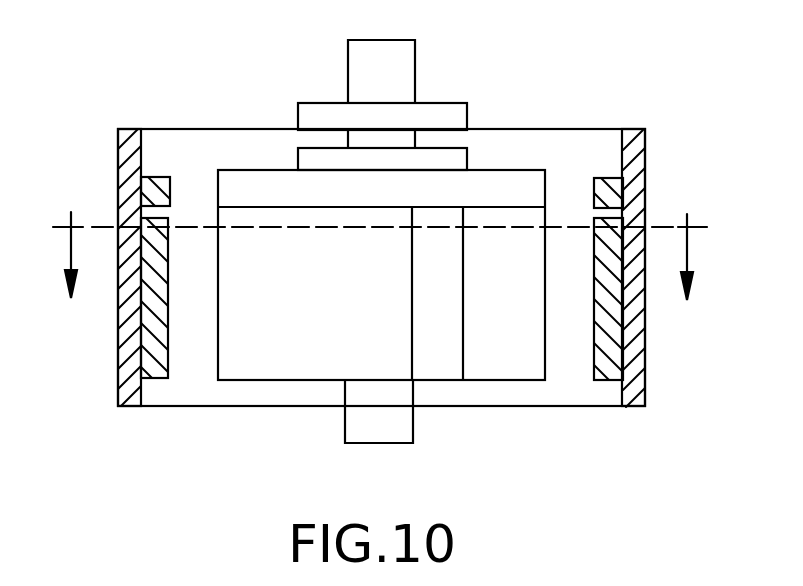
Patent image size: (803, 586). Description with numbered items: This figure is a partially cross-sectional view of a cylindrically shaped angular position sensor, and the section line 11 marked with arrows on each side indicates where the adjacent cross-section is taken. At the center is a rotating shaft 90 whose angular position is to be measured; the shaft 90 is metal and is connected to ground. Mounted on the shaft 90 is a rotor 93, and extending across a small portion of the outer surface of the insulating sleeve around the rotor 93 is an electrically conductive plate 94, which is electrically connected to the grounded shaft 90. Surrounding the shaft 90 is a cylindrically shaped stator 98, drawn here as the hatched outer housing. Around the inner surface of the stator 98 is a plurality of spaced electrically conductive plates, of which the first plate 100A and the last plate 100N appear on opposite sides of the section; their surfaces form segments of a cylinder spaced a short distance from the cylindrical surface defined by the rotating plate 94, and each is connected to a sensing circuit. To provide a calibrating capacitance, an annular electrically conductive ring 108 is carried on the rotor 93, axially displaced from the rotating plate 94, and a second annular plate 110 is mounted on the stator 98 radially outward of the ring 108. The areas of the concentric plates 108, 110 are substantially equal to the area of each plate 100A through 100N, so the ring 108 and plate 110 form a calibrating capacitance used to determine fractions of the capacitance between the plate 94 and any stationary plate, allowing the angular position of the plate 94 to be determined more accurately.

The stator 98 is at (655, 158).
The rotating shaft 90 is at (347, 65).
The annular electrically conductive ring 108 is at (243, 187).
The rotor 93 is at (303, 380).
The electrically conductive plate 94 is at (450, 372).
The electrically conductive plate 100A is at (152, 380).
The electrically conductive plate 100N is at (603, 385).
The second annular plate 110 is at (607, 178).
The section line 11 is at (379, 278).